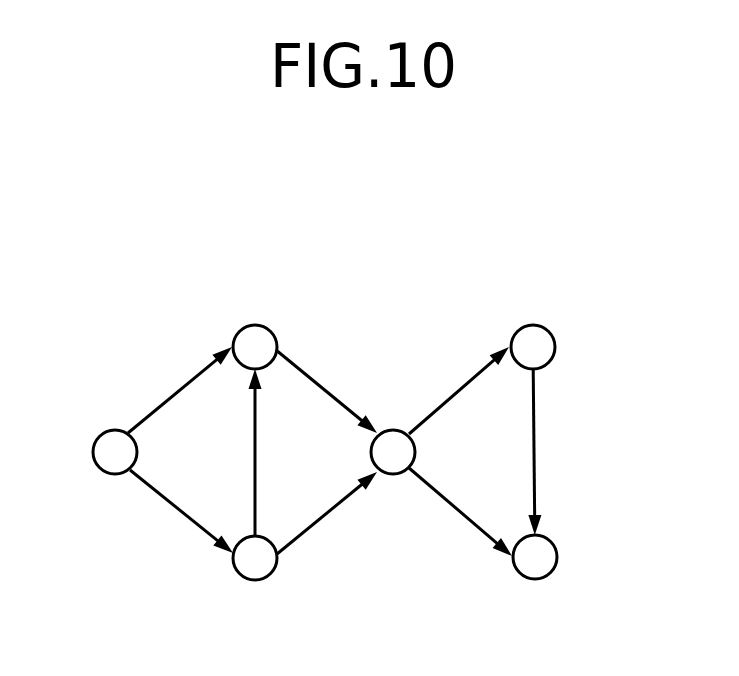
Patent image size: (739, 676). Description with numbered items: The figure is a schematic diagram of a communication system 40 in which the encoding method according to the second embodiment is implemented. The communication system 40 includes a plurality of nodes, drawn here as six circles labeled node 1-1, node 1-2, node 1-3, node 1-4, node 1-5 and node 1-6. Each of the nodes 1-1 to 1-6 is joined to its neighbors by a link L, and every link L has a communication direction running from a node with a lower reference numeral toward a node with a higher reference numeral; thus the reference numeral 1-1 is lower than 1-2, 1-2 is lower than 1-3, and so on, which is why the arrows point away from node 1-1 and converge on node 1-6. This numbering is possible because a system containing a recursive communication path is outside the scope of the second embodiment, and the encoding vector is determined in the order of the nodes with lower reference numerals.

The communication system 40 is at (450, 256).
The node 1-1 is at (108, 434).
The node 1-2 is at (252, 580).
The node 1-3 is at (255, 324).
The node 1-4 is at (390, 475).
The node 1-5 is at (532, 324).
The node 1-6 is at (536, 580).
The link L is at (180, 387).